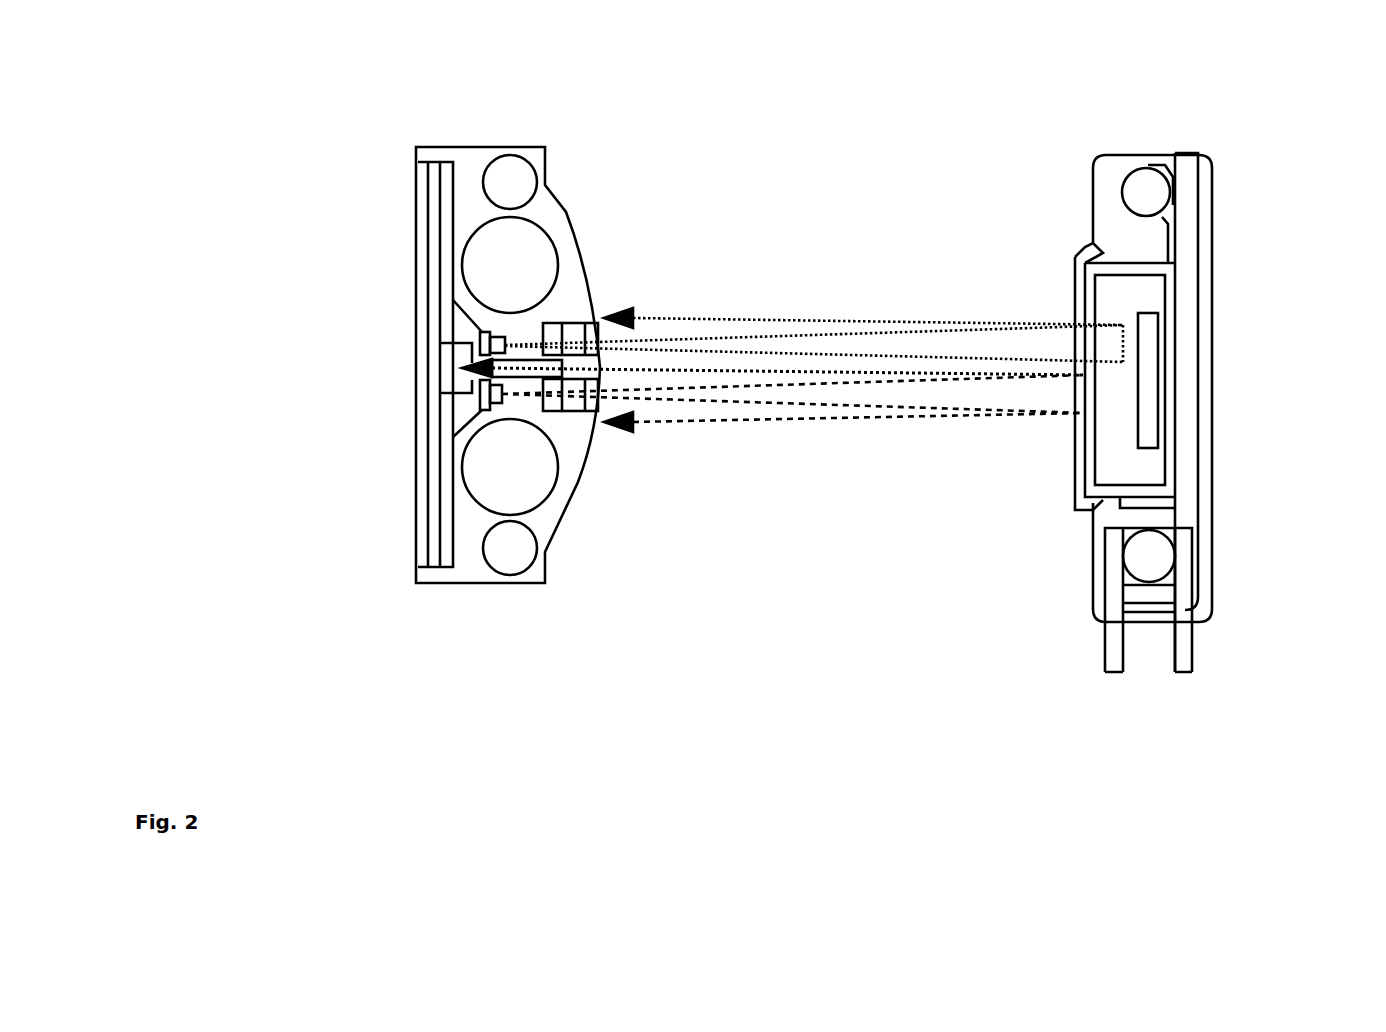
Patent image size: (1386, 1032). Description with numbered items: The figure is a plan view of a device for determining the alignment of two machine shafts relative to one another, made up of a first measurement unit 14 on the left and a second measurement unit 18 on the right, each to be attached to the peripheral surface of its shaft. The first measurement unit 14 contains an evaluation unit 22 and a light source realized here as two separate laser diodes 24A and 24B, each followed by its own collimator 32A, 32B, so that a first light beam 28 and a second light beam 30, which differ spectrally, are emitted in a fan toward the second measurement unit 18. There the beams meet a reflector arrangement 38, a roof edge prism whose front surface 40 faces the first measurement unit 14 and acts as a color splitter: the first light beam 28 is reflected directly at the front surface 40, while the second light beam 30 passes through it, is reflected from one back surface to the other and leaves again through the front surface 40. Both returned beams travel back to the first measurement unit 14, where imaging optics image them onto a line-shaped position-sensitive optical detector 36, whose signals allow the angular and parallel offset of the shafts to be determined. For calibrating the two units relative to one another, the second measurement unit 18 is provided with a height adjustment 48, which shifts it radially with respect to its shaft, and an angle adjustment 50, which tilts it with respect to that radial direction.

The first measurement unit 14 is at (370, 180).
The evaluation unit 22 is at (430, 247).
The laser diode 24A is at (480, 393).
The laser diode 24B is at (480, 340).
The position-sensitive optical detector 36 is at (458, 368).
The collimator 32A is at (553, 403).
The collimator 32B is at (549, 334).
The second light beam 30 is at (1025, 345).
The first light beam 28 is at (1027, 400).
The second measurement unit 18 is at (1065, 567).
The front surface 40 is at (1080, 243).
The reflector arrangement 38 is at (1072, 482).
The angle adjustment 50 is at (1150, 375).
The height adjustment 48 is at (1160, 550).